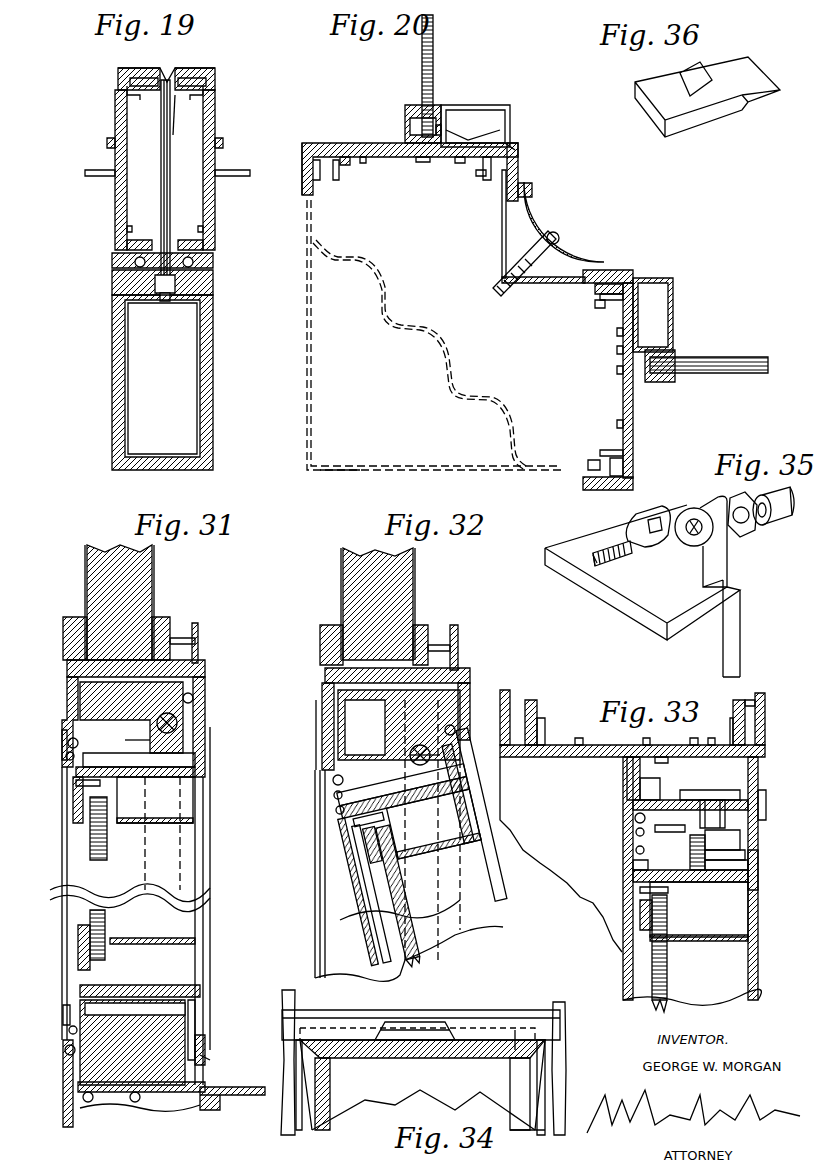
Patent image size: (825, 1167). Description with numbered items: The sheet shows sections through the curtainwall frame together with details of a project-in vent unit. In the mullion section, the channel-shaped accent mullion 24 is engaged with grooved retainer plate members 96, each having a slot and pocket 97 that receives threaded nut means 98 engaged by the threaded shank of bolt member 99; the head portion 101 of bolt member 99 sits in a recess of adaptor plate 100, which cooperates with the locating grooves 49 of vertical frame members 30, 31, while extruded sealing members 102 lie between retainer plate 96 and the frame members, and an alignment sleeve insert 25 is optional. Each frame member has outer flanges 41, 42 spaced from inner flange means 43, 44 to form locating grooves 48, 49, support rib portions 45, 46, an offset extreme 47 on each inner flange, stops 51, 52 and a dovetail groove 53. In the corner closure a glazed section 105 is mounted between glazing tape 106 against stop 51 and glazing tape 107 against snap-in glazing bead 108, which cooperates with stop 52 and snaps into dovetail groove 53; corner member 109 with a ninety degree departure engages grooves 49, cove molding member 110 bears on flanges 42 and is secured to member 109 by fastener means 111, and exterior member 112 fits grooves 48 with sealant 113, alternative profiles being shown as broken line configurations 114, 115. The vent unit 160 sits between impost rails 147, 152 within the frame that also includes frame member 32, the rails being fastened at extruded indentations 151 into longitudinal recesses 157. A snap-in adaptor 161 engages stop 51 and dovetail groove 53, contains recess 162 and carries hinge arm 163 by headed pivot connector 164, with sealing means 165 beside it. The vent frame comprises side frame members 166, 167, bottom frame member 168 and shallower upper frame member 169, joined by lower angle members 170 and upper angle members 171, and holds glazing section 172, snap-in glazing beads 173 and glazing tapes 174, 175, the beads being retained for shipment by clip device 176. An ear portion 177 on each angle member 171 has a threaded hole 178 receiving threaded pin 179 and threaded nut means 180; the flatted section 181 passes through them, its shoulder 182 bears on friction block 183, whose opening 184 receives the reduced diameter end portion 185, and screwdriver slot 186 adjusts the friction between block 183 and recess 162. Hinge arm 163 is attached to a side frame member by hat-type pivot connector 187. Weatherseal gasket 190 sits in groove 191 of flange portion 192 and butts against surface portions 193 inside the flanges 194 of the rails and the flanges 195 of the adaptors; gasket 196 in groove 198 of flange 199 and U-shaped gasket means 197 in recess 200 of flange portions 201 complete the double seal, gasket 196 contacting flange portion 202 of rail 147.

In FIG. 19, the accent mullion 24 is at (212, 470).
In FIG. 19, the alignment sleeve insert 25 is at (175, 455).
In FIG. 19, the vertical frame member 30 is at (116, 192).
In FIG. 20, the vertical frame member 30 is at (338, 150).
In FIG. 34, the vertical frame member 30 is at (283, 1108).
In FIG. 19, the vertical frame member 31 is at (214, 194).
In FIG. 20, the vertical frame member 31 is at (634, 402).
In FIG. 33, the vertical frame member 31 is at (550, 745).
In FIG. 34, the vertical frame member 31 is at (563, 1075).
In FIG. 33, the frame member 32 is at (533, 804).
In FIG. 20, the outer flange 41 is at (305, 160).
In FIG. 19, the outer flange 42 is at (122, 70).
In FIG. 20, the outer flange 42 is at (615, 270).
In FIG. 33, the outer flange 42 is at (764, 716).
In FIG. 19, the inner flange means 43 is at (204, 228).
In FIG. 20, the inner flange means 43 is at (344, 156).
In FIG. 33, the inner flange means 43 is at (533, 710).
In FIG. 19, the inner flange means 44 is at (208, 90).
In FIG. 20, the inner flange means 44 is at (484, 164).
In FIG. 33, the inner flange means 44 is at (742, 700).
In FIG. 20, the support rib portion 45 is at (362, 160).
In FIG. 33, the support rib portion 45 is at (580, 742).
In FIG. 20, the support rib portion 46 is at (460, 160).
In FIG. 33, the support rib portion 46 is at (695, 740).
In FIG. 20, the offset extreme 47 is at (484, 178).
In FIG. 33, the offset extreme 47 is at (735, 718).
In FIG. 19, the locating groove 48 is at (204, 247).
In FIG. 20, the locating groove 48 is at (313, 172).
In FIG. 33, the locating groove 48 is at (507, 700).
In FIG. 19, the locating groove 49 is at (208, 82).
In FIG. 20, the locating groove 49 is at (632, 274).
In FIG. 33, the locating groove 49 is at (760, 705).
In FIG. 19, the stop 51 is at (248, 176).
In FIG. 20, the stop 51 is at (405, 125).
In FIG. 33, the stop 51 is at (627, 770).
In FIG. 19, the stop 52 is at (222, 142).
In FIG. 20, the stop 52 is at (470, 140).
In FIG. 19, the dovetail groove 53 is at (208, 98).
In FIG. 20, the dovetail groove 53 is at (636, 298).
In FIG. 33, the dovetail groove 53 is at (757, 770).
In FIG. 19, the grooved retainer plate member 96 is at (113, 286).
In FIG. 19, the slot and pocket 97 is at (171, 300).
In FIG. 19, the threaded nut means 98 is at (152, 296).
In FIG. 19, the bolt member 99 is at (161, 195).
In FIG. 19, the adaptor plate 100 is at (175, 100).
In FIG. 19, the head portion 101 is at (170, 70).
In FIG. 19, the extruded sealing member 102 is at (212, 268).
In FIG. 20, the glazed section 105 is at (745, 362).
In FIG. 20, the glazing tape 106 is at (676, 378).
In FIG. 20, the glazing tape 107 is at (676, 356).
In FIG. 20, the snap-in glazing bead 108 is at (675, 300).
In FIG. 20, the corner member 109 is at (503, 262).
In FIG. 20, the cove molding member 110 is at (587, 250).
In FIG. 20, the fastener means 111 is at (556, 235).
In FIG. 20, the exterior member 112 is at (566, 470).
In FIG. 20, the sealant 113 is at (636, 470).
In FIG. 20, the broken line configuration 114 is at (342, 470).
In FIG. 20, the broken line configuration 115 is at (462, 396).
In FIG. 31, the impost rail 147 is at (200, 670).
In FIG. 20, the extruded indentation 151 is at (420, 158).
In FIG. 33, the extruded indentation 151 is at (710, 740).
In FIG. 31, the impost rail 152 is at (222, 1085).
In FIG. 33, the impost rail 152 is at (660, 757).
In FIG. 31, the longitudinal recess 157 is at (95, 1100).
In FIG. 31, the vent unit 160 is at (221, 745).
In FIG. 33, the snap-in adaptor 161 is at (690, 790).
In FIG. 34, the snap-in adaptor 161 is at (566, 1110).
In FIG. 31, the recess 162 is at (180, 655).
In FIG. 32, the recess 162 is at (410, 960).
In FIG. 33, the hinge arm 163 is at (666, 828).
In FIG. 33, the headed pivot connector 164 is at (668, 800).
In FIG. 33, the sealing means 165 is at (640, 790).
In FIG. 33, the side frame member 166 is at (718, 895).
In FIG. 34, the side frame member 166 is at (530, 1132).
In FIG. 34, the side frame member 167 is at (310, 1130).
In FIG. 31, the bottom frame member 168 is at (202, 990).
In FIG. 31, the upper frame member 169 is at (153, 783).
In FIG. 34, the upper frame member 169 is at (514, 1035).
In FIG. 31, the angle member 170 is at (135, 1008).
In FIG. 35, the angle member 171 is at (568, 572).
In FIG. 31, the angle member 171 is at (202, 772).
In FIG. 32, the angle member 171 is at (455, 780).
In FIG. 33, the angle member 171 is at (634, 880).
In FIG. 31, the glazing section 172 is at (88, 845).
In FIG. 32, the glazing section 172 is at (370, 920).
In FIG. 33, the glazing section 172 is at (668, 1003).
In FIG. 34, the glazing section 172 is at (382, 1092).
In FIG. 31, the snap-in glazing bead 173 is at (196, 940).
In FIG. 32, the snap-in glazing bead 173 is at (472, 852).
In FIG. 33, the snap-in glazing bead 173 is at (700, 942).
In FIG. 34, the snap-in glazing bead 173 is at (513, 1086).
In FIG. 31, the glazing tape 174 is at (79, 950).
In FIG. 32, the glazing tape 174 is at (357, 845).
In FIG. 33, the glazing tape 174 is at (648, 915).
In FIG. 31, the glazing tape 175 is at (105, 940).
In FIG. 32, the glazing tape 175 is at (384, 850).
In FIG. 33, the glazing tape 175 is at (668, 945).
In FIG. 36, the clip device 176 is at (702, 67).
In FIG. 31, the clip device 176 is at (76, 783).
In FIG. 32, the clip device 176 is at (380, 826).
In FIG. 33, the clip device 176 is at (640, 893).
In FIG. 35, the ear portion 177 is at (746, 568).
In FIG. 31, the ear portion 177 is at (100, 745).
In FIG. 32, the ear portion 177 is at (370, 778).
In FIG. 33, the ear portion 177 is at (760, 880).
In FIG. 35, the threaded hole 178 is at (683, 515).
In FIG. 32, the threaded hole 178 is at (408, 745).
In FIG. 35, the threaded pin 179 is at (592, 555).
In FIG. 31, the threaded pin 179 is at (145, 740).
In FIG. 32, the threaded pin 179 is at (408, 755).
In FIG. 33, the threaded pin 179 is at (746, 855).
In FIG. 35, the threaded nut means 180 is at (696, 518).
In FIG. 33, the threaded nut means 180 is at (749, 866).
In FIG. 35, the flatted section 181 is at (603, 548).
In FIG. 33, the flatted section 181 is at (742, 840).
In FIG. 35, the shoulder 182 is at (640, 528).
In FIG. 35, the friction block 183 is at (738, 500).
In FIG. 33, the friction block 183 is at (728, 830).
In FIG. 35, the opening 184 is at (766, 524).
In FIG. 35, the reduced diameter end portion 185 is at (655, 545).
In FIG. 35, the screwdriver slot 186 is at (600, 560).
In FIG. 31, the screwdriver slot 186 is at (157, 723).
In FIG. 32, the screwdriver slot 186 is at (430, 755).
In FIG. 33, the hat-type pivot connector 187 is at (690, 850).
In FIG. 31, the weatherseal gasket 190 is at (69, 1030).
In FIG. 32, the weatherseal gasket 190 is at (335, 810).
In FIG. 33, the weatherseal gasket 190 is at (634, 852).
In FIG. 32, the groove 191 is at (333, 795).
In FIG. 31, the flange portion 192 is at (66, 1050).
In FIG. 32, the flange portion 192 is at (332, 780).
In FIG. 33, the flange portion 192 is at (634, 818).
In FIG. 31, the surface portion 193 is at (86, 1042).
In FIG. 32, the surface portion 193 is at (322, 725).
In FIG. 33, the surface portion 193 is at (635, 830).
In FIG. 31, the flange 194 is at (63, 1012).
In FIG. 32, the flange 194 is at (316, 738).
In FIG. 33, the flange 195 is at (634, 866).
In FIG. 31, the weatherseal gasket 196 is at (206, 686).
In FIG. 32, the weatherseal gasket 196 is at (458, 720).
In FIG. 34, the weatherseal gasket 196 is at (450, 1030).
In FIG. 31, the gasket means 197 is at (208, 1030).
In FIG. 33, the gasket means 197 is at (767, 792).
In FIG. 31, the groove 198 is at (204, 700).
In FIG. 32, the groove 198 is at (460, 700).
In FIG. 31, the flange 199 is at (200, 712).
In FIG. 32, the flange 199 is at (456, 728).
In FIG. 34, the flange 199 is at (383, 1024).
In FIG. 31, the recess 200 is at (208, 1048).
In FIG. 31, the flange portion 201 is at (205, 1005).
In FIG. 32, the flange portion 202 is at (462, 670).
In FIG. 34, the flange portion 202 is at (302, 1025).